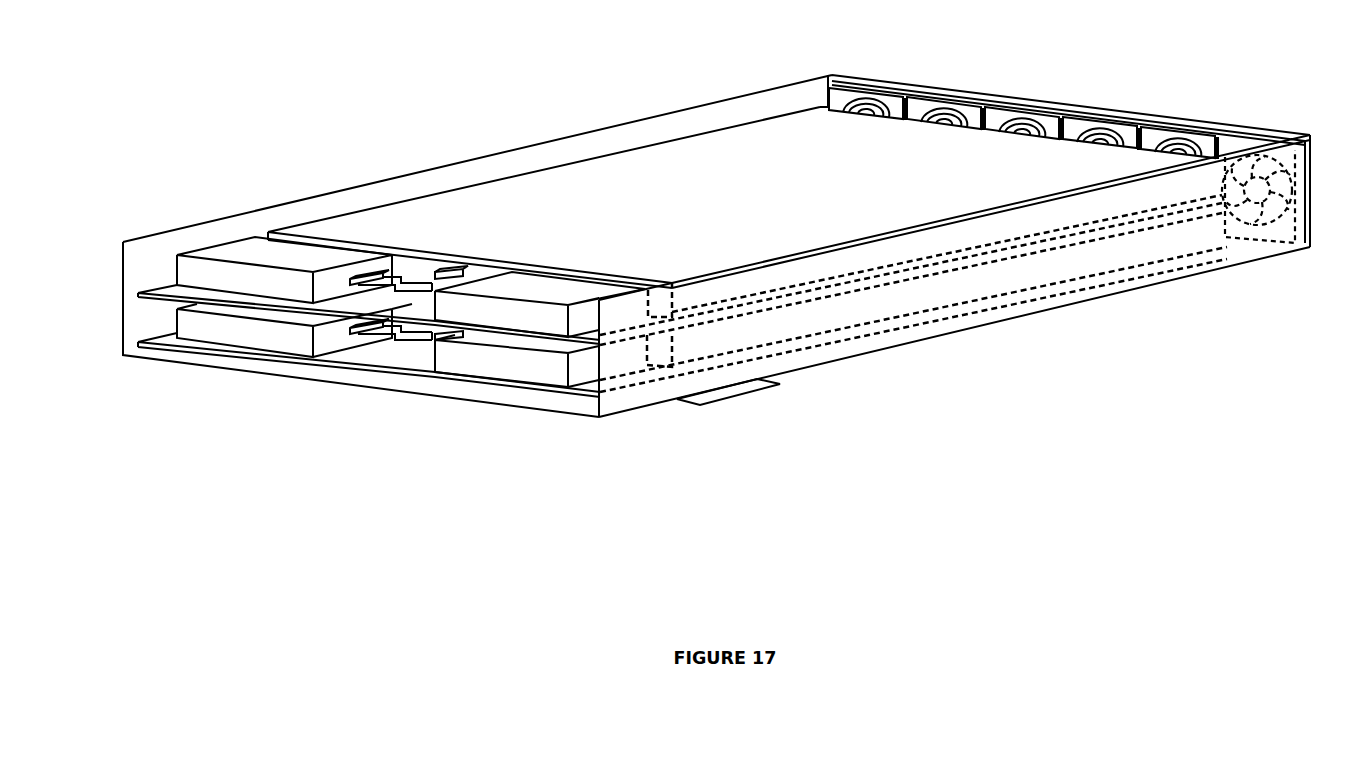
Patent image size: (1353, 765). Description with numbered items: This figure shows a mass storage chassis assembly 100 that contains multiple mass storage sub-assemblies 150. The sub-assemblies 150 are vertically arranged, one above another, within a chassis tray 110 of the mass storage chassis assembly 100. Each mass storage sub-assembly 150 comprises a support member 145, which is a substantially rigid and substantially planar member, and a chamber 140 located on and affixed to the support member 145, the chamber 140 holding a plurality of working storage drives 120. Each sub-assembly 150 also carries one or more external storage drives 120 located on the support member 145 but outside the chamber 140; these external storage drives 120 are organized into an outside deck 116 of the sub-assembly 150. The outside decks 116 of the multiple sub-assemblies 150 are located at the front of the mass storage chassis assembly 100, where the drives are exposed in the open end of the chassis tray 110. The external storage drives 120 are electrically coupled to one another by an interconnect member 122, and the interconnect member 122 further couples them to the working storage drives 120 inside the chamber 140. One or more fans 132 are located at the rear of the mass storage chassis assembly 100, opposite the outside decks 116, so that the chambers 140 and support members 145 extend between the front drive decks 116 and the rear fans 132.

The mass storage chassis assembly 100 is at (1225, 577).
The chassis tray 110 is at (552, 139).
The outside deck 116 is at (745, 392).
The storage drive 120 is at (521, 455).
The interconnect member 122 is at (395, 290).
The fan 132 is at (1247, 133).
The chamber 140 is at (1037, 218).
The support member 145 is at (850, 287).
The mass storage sub-assembly 150 is at (160, 348).